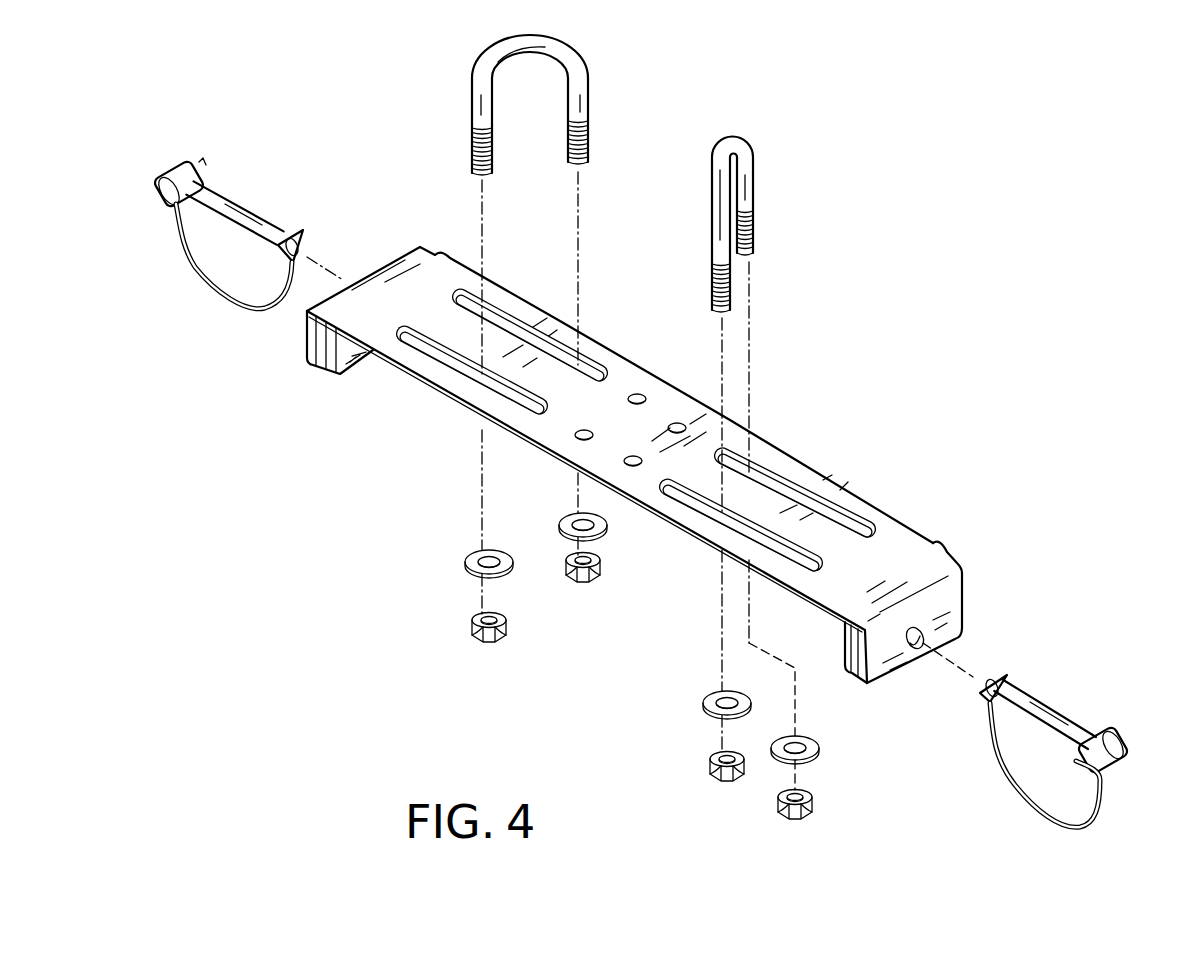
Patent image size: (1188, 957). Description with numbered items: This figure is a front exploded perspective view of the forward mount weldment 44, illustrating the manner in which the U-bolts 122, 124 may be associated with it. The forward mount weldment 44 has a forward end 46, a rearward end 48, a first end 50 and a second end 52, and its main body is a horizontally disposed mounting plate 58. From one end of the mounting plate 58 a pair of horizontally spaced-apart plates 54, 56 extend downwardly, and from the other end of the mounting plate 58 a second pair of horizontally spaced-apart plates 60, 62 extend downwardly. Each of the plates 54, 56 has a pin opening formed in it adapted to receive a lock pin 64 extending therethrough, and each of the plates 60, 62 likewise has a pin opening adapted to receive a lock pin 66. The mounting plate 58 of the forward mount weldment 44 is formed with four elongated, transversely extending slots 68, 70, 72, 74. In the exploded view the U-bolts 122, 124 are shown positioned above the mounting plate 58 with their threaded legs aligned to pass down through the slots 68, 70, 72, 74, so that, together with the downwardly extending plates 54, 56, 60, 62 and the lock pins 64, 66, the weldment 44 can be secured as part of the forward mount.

The forward mount weldment 44 is at (848, 470).
The forward end 46 is at (718, 552).
The rearward end 48 is at (787, 452).
The first end 50 is at (376, 258).
The second end 52 is at (1010, 560).
The plate 54 is at (303, 343).
The plate 56 is at (338, 377).
The mounting plate 58 is at (628, 437).
The plate 60 is at (950, 603).
The plate 62 is at (843, 647).
The lock pin 64 is at (240, 220).
The lock pin 66 is at (1063, 725).
The slot 68 is at (590, 368).
The slot 70 is at (467, 373).
The slot 72 is at (853, 523).
The slot 74 is at (705, 510).
The U-bolt 122 is at (578, 92).
The U-bolt 124 is at (750, 188).